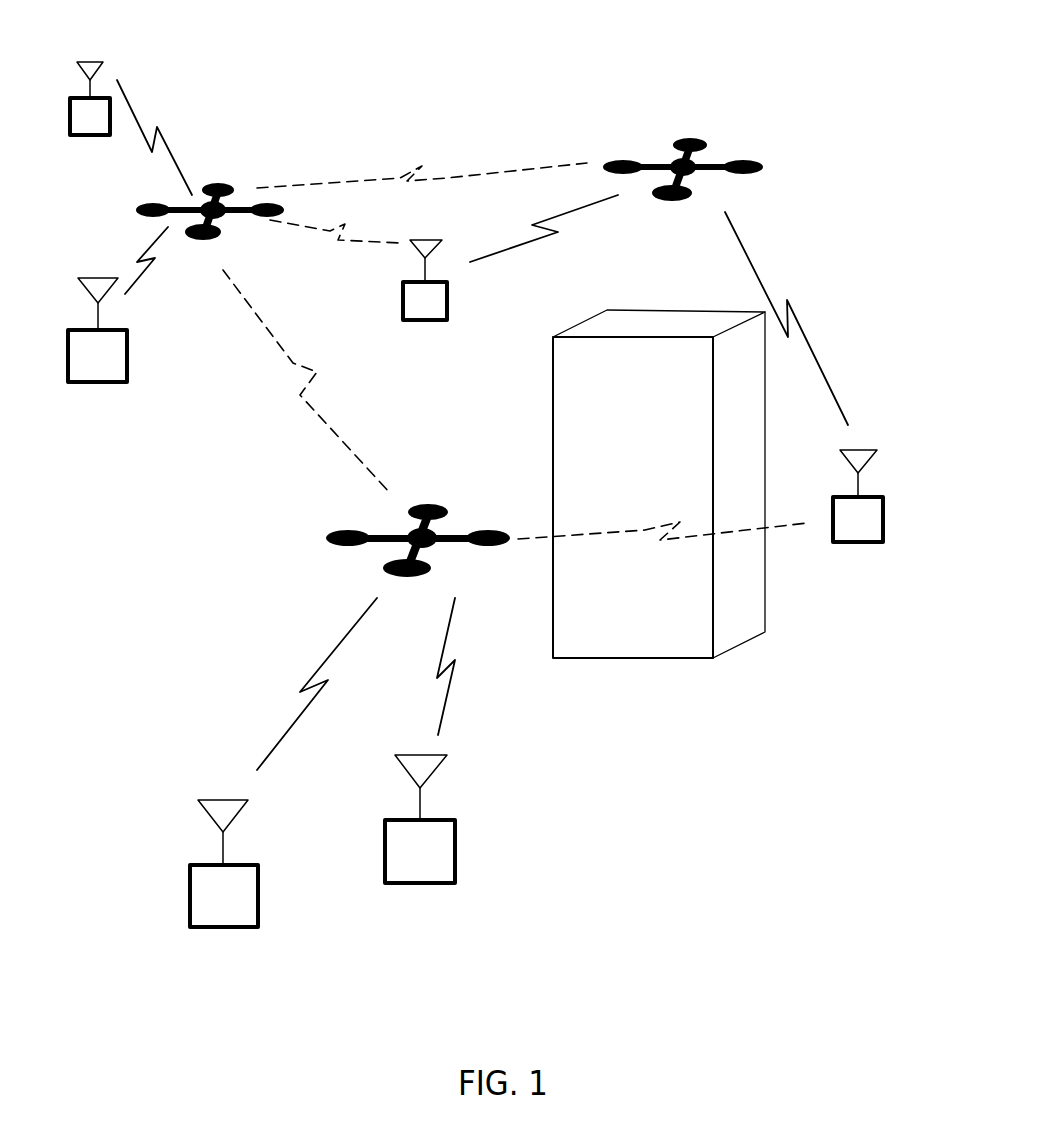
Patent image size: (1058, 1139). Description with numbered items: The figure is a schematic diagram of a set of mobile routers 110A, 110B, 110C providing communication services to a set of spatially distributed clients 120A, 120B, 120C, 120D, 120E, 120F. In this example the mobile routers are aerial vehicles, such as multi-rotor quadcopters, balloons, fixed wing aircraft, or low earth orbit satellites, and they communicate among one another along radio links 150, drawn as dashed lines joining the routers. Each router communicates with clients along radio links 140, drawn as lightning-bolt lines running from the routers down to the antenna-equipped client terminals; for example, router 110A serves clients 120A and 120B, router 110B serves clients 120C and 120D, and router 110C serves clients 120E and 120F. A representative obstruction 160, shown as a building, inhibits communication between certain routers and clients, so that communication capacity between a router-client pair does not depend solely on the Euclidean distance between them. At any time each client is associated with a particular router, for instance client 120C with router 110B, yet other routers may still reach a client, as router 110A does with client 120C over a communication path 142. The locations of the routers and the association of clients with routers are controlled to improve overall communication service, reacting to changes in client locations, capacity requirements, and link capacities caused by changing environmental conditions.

The mobile router 110A is at (240, 177).
The mobile router 110B is at (717, 127).
The mobile router 110C is at (355, 558).
The client 120A is at (123, 63).
The client 120B is at (98, 383).
The client 120C is at (423, 322).
The client 120D is at (858, 543).
The client 120E is at (223, 928).
The client 120F is at (420, 885).
The radio link 140 is at (173, 157).
The communication path 142 is at (360, 233).
The radio link 150 is at (493, 162).
The obstruction 160 is at (632, 660).